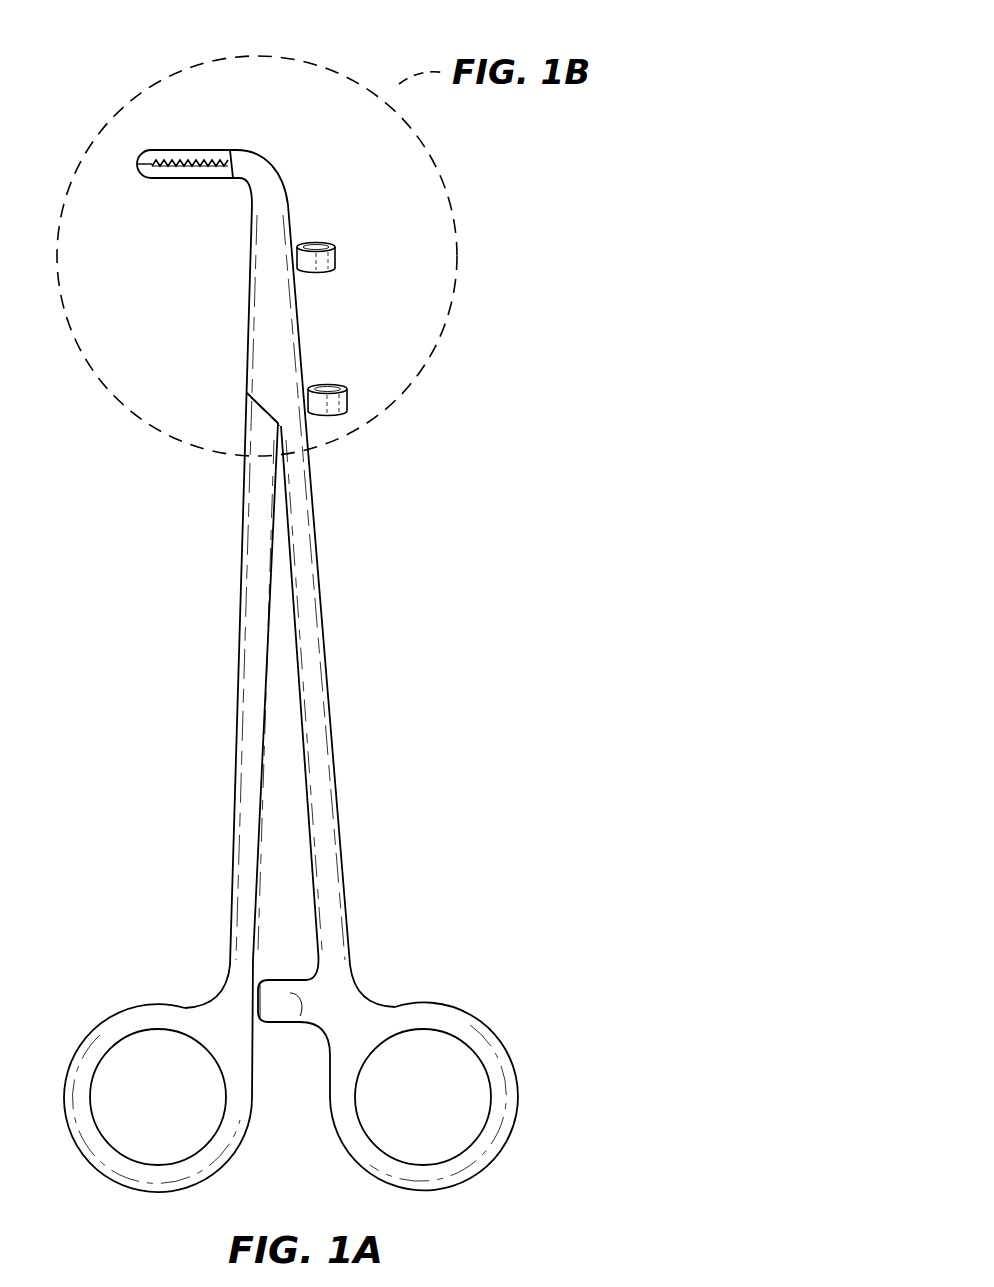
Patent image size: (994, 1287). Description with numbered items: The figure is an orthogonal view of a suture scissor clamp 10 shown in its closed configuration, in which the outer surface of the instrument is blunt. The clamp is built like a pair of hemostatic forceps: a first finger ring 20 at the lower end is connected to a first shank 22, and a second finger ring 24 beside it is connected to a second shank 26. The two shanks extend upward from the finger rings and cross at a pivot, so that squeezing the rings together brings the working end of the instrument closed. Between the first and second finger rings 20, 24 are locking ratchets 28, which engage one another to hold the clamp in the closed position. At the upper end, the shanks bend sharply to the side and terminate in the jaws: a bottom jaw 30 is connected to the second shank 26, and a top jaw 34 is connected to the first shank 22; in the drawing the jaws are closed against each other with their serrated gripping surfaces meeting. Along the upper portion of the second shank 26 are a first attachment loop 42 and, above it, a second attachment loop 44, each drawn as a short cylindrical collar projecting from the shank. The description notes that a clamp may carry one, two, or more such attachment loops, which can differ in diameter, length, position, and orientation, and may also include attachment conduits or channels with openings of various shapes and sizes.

The suture scissor clamp 10 is at (618, 121).
The first finger ring 20 is at (123, 1031).
The first shank 22 is at (251, 685).
The second finger ring 24 is at (447, 1022).
The second shank 26 is at (312, 598).
The locking ratchets 28 is at (292, 1018).
The bottom jaw 30 is at (185, 179).
The top jaw 34 is at (196, 150).
The first attachment loop 42 is at (324, 390).
The second attachment loop 44 is at (313, 249).